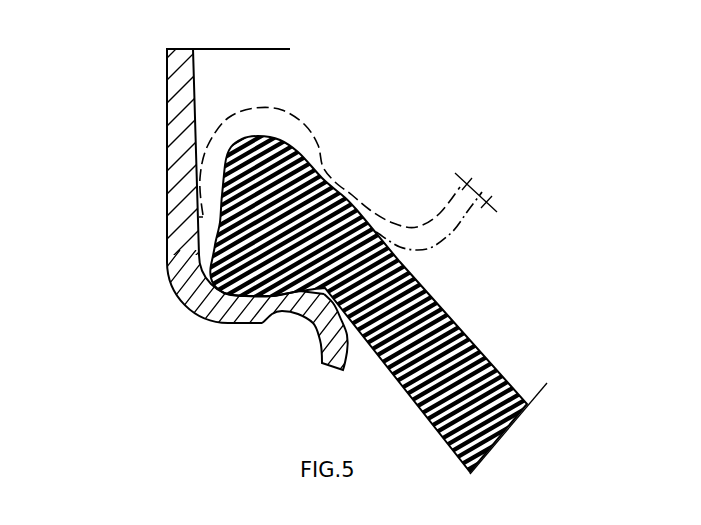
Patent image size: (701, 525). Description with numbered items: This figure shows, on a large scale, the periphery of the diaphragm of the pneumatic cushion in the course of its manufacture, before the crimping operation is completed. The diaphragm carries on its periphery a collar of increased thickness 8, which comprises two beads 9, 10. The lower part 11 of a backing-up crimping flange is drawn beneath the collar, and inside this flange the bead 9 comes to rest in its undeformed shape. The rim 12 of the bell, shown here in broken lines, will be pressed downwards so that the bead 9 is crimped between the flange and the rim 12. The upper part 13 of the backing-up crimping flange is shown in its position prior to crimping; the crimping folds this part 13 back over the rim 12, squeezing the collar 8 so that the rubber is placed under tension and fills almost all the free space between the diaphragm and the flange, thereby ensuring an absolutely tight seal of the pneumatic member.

The collar of increased thickness 8 is at (350, 197).
The bead 9 is at (210, 290).
The bead 10 is at (265, 138).
The lower part of backing-up crimping flange 11 is at (263, 306).
The rim of the bell 12 is at (367, 215).
The upper part of backing-up crimping flange 13 is at (175, 73).